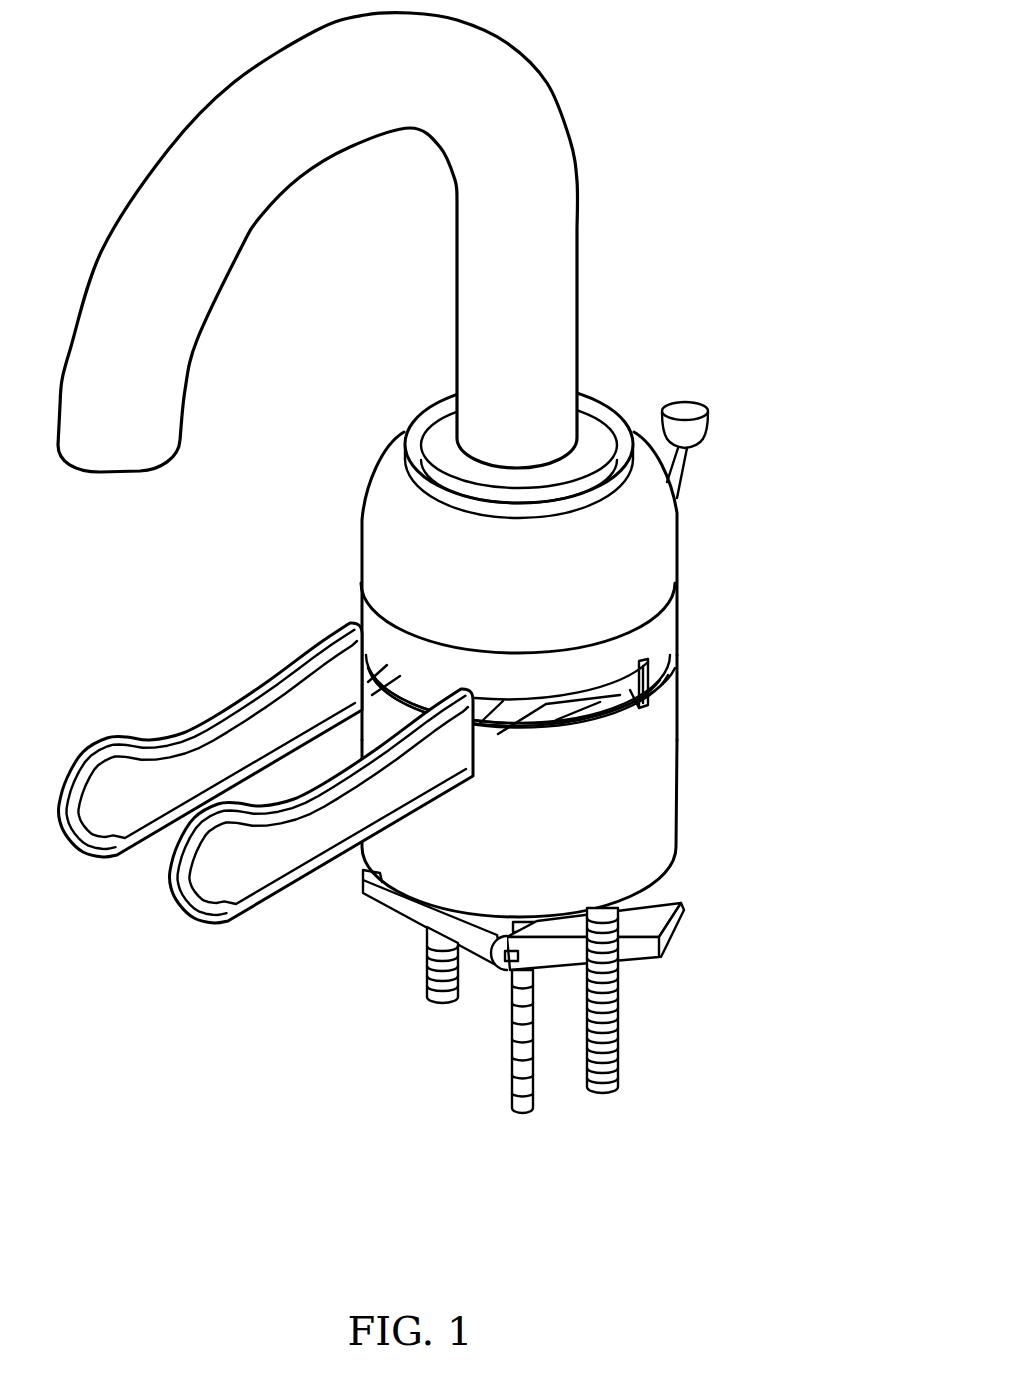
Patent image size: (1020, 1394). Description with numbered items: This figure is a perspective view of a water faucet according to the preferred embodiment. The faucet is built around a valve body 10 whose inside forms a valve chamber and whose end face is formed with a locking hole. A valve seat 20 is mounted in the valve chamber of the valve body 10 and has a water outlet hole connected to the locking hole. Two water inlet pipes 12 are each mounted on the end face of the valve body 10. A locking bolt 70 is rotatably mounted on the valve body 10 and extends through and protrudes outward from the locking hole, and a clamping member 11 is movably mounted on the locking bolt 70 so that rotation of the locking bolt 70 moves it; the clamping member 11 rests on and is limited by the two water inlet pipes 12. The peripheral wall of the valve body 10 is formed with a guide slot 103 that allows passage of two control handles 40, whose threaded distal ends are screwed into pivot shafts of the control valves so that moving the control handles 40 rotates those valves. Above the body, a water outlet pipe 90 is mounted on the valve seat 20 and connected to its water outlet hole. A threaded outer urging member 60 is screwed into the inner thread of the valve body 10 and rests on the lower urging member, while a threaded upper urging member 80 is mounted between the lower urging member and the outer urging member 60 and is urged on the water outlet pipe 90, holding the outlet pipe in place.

The valve body 10 is at (683, 823).
The clamping member 11 is at (407, 910).
The water inlet pipes 12 is at (423, 973).
The valve seat 20 is at (608, 703).
The control handles 40 is at (242, 923).
The outer urging member 60 is at (680, 550).
The locking bolt 70 is at (537, 1100).
The upper urging member 80 is at (613, 393).
The water outlet pipe 90 is at (569, 139).
The guide slot 103 is at (650, 675).